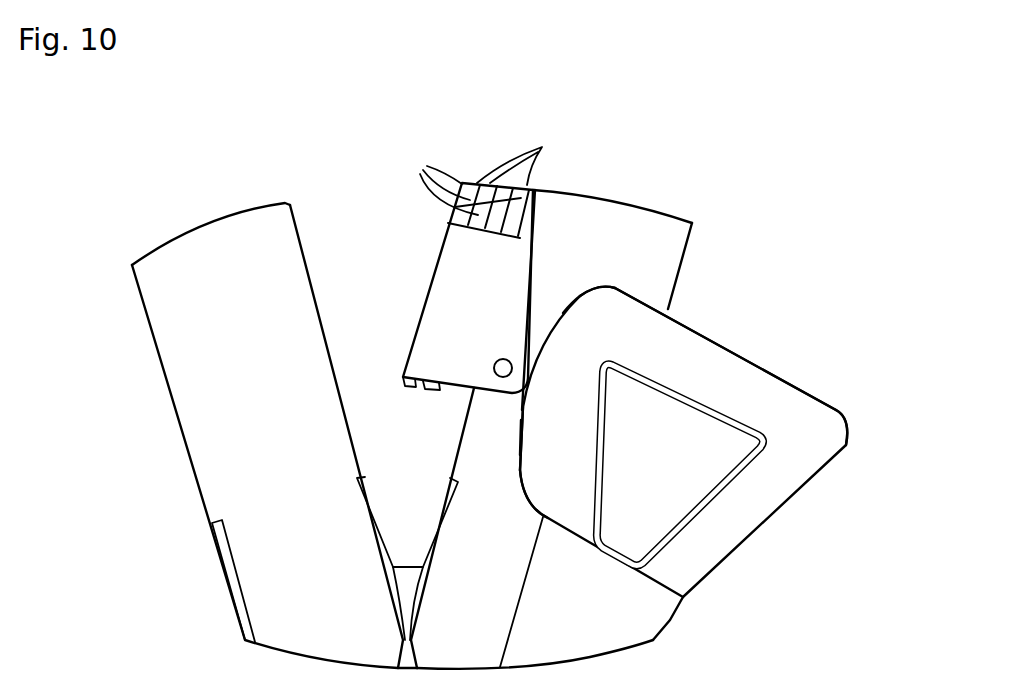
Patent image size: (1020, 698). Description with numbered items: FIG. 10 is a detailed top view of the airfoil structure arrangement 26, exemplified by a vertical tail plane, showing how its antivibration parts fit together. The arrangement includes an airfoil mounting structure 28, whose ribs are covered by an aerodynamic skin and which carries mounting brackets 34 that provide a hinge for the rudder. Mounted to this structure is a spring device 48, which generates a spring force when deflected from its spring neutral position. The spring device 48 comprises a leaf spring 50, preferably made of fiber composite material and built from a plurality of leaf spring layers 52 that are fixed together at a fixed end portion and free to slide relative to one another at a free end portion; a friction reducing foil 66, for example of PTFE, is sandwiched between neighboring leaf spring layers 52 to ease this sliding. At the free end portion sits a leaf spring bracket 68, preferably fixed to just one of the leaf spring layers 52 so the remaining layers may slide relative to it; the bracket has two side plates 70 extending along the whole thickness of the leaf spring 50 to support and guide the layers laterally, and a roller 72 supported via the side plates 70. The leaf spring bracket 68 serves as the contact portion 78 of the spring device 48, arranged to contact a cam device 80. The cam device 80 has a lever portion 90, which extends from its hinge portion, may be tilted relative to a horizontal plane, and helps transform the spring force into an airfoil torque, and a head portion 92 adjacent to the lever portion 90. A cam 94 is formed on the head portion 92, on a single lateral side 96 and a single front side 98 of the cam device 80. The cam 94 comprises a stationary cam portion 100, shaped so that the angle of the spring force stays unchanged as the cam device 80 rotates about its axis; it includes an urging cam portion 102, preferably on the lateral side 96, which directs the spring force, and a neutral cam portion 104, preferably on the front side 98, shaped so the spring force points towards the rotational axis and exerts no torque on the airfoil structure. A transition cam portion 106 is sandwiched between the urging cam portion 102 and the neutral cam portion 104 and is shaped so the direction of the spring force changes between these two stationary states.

The airfoil structure arrangement 26 is at (130, 184).
The airfoil mounting structure 28 is at (210, 223).
The mounting brackets 34 is at (258, 227).
The spring device 48 is at (504, 141).
The leaf spring 50 is at (492, 210).
The leaf spring layers 52 is at (435, 184).
The friction reducing foil 66 is at (518, 155).
The leaf spring bracket 68 is at (431, 250).
The side plates 70 is at (440, 303).
The roller 72 is at (500, 376).
The contact portion 78 is at (540, 300).
The cam device 80 is at (738, 334).
The lever portion 90 is at (638, 622).
The head portion 92 is at (680, 464).
The cam 94 is at (580, 293).
The lateral side 96 is at (517, 450).
The front side 98 is at (797, 387).
The stationary cam portion 100 is at (517, 450).
The urging cam portion 102 is at (516, 424).
The neutral cam portion 104 is at (760, 360).
The transition cam portion 106 is at (651, 306).